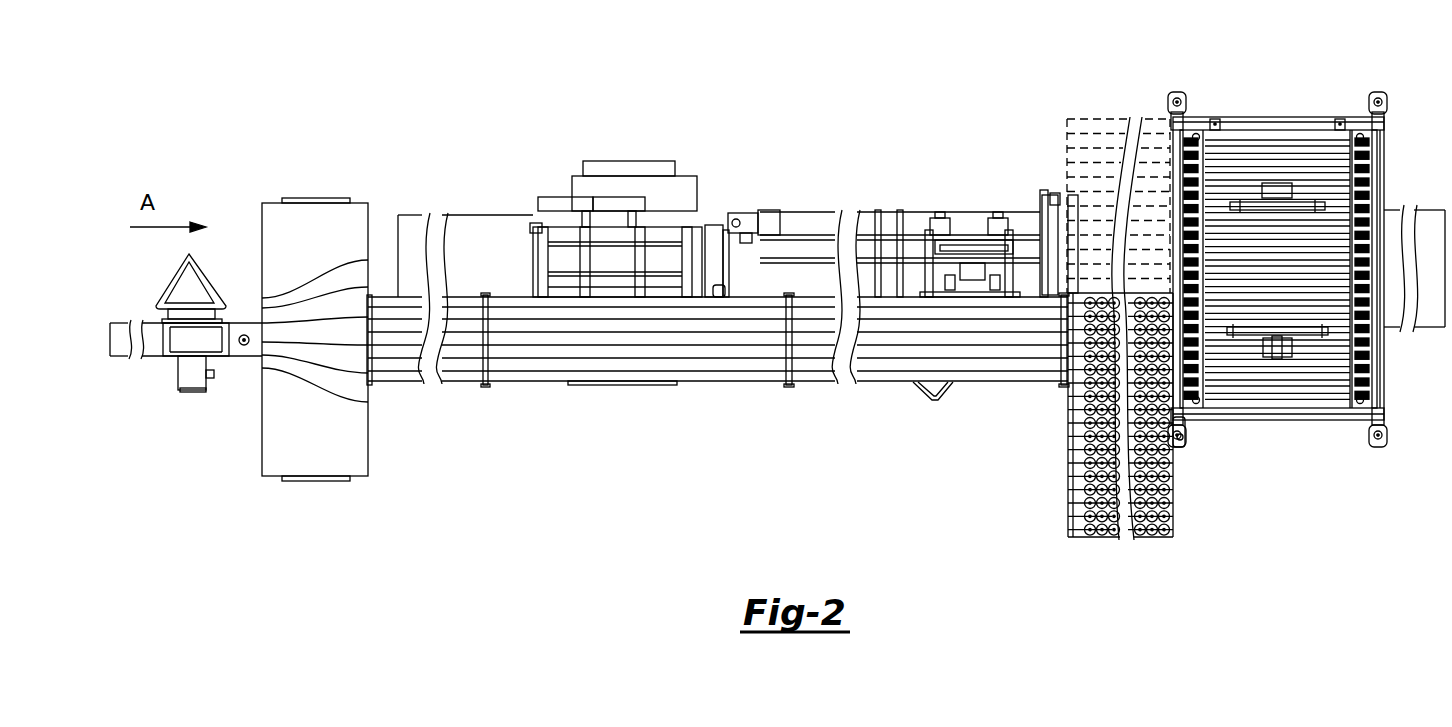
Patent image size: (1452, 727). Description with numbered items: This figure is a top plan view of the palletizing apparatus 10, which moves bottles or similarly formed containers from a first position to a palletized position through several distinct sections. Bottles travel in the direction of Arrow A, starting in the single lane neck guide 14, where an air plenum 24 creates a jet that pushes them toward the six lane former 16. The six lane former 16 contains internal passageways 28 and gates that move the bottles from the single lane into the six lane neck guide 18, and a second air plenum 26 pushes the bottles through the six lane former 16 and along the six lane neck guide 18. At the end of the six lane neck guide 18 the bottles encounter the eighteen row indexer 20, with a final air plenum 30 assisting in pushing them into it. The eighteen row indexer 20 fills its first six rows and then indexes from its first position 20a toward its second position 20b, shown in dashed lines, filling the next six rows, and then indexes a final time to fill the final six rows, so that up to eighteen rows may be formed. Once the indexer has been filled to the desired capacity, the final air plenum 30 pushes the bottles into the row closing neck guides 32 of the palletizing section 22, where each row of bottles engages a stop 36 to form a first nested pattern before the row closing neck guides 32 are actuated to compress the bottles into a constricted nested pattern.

The palletizing apparatus 10 is at (522, 127).
The single lane neck guide 14 is at (148, 358).
The six lane former 16 is at (362, 212).
The six lane neck guide 18 is at (403, 378).
The eighteen row indexer 20 is at (1078, 371).
The first position 20a is at (1052, 512).
The second position 20b is at (1077, 130).
The palletizing section 22 is at (275, 300).
The air plenum 24 is at (188, 285).
The second air plenum 26 is at (938, 400).
The internal passageways 28 is at (268, 362).
The final air plenum 30 is at (1288, 352).
The row closing neck guides 32 is at (1230, 396).
The stop 36 is at (1375, 152).